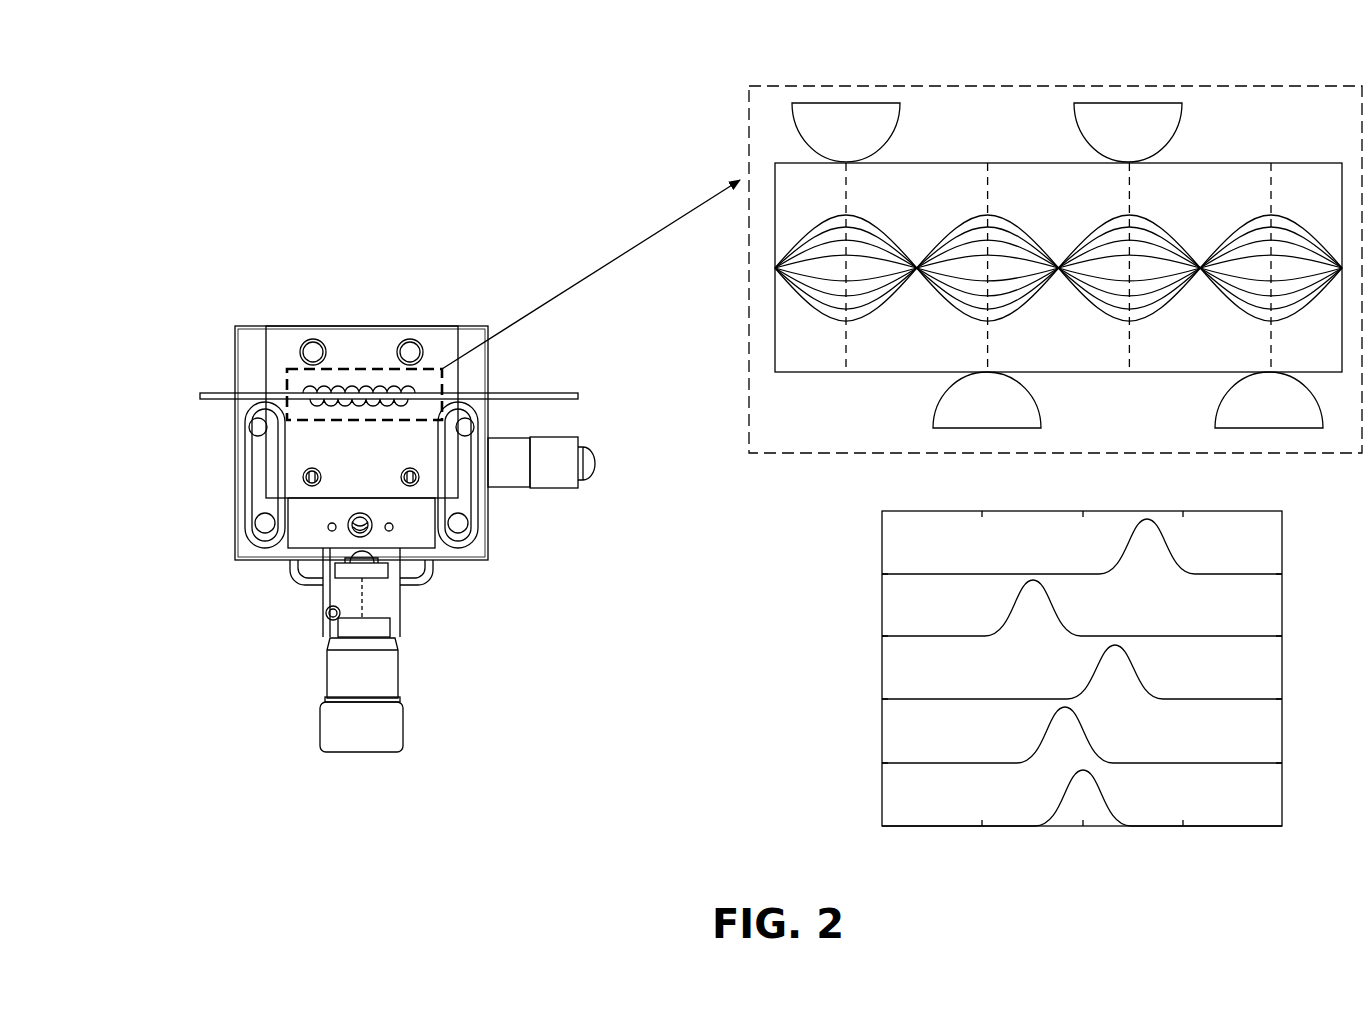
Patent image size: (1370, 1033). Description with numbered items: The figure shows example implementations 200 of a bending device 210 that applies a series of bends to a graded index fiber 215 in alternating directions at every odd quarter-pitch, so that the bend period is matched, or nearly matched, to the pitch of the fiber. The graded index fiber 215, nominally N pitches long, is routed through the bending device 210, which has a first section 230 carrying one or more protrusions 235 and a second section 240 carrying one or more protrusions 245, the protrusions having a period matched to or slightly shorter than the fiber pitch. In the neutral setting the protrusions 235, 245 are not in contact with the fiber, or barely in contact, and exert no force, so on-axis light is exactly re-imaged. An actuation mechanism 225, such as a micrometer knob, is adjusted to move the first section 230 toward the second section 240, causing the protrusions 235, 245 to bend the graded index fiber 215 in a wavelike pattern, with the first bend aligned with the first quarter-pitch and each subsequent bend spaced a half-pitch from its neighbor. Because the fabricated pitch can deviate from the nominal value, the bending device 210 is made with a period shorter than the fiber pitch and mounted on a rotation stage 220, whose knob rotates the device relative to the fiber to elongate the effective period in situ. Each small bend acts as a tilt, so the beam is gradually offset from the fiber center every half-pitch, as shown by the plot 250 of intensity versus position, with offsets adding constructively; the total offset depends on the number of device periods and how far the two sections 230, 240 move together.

The example implementations 200 is at (238, 107).
The bending device 210 is at (248, 288).
The graded index fiber 215 is at (557, 392).
The rotation stage 220 is at (595, 465).
The actuation mechanism 225 is at (360, 735).
The first section 230 is at (266, 457).
The protrusions 235 is at (1041, 410).
The second section 240 is at (266, 360).
The protrusions 245 is at (901, 123).
The plot 250 is at (758, 678).